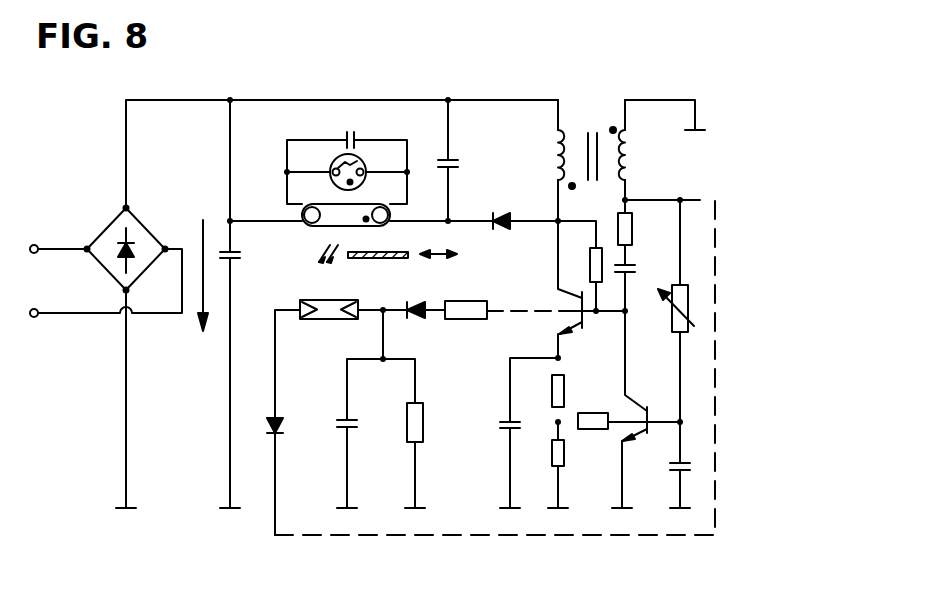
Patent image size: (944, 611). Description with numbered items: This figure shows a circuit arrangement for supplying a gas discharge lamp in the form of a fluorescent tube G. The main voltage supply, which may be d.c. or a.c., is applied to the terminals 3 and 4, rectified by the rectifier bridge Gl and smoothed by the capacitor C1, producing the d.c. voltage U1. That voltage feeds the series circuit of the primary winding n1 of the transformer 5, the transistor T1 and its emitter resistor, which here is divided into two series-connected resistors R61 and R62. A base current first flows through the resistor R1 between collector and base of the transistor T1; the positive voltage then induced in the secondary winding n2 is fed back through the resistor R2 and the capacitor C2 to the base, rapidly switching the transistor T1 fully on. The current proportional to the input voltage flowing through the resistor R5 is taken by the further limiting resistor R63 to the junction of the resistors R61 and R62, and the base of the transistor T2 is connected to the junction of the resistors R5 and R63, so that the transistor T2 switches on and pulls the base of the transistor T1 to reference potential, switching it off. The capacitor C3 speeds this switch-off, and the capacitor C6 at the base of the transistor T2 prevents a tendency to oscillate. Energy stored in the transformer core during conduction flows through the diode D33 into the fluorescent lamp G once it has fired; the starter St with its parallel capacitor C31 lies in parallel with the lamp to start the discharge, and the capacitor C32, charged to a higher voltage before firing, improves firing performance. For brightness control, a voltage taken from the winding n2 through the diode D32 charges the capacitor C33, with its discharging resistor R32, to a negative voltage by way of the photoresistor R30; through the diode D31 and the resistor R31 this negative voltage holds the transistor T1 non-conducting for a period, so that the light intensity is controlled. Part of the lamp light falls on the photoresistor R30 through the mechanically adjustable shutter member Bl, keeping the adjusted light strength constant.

The terminal 3 is at (25, 250).
The terminal 4 is at (25, 314).
The rectifier bridge Gl is at (101, 225).
The d.c. voltage U1 is at (204, 260).
The capacitor C1 is at (247, 263).
The capacitor C31 is at (354, 137).
The starter St is at (362, 164).
The fluorescent tube G is at (366, 211).
The capacitor C32 is at (453, 163).
The shutter member Bl is at (388, 265).
The diode D33 is at (503, 206).
The primary winding n1 is at (554, 160).
The transformer 5 is at (591, 133).
The secondary winding n2 is at (633, 160).
The resistor R1 is at (591, 251).
The resistor R2 is at (633, 222).
The capacitor C2 is at (635, 266).
The resistor R5 is at (665, 308).
The transistor T1 is at (588, 318).
The photoresistor R30 is at (333, 315).
The diode D31 is at (409, 316).
The resistor R31 is at (455, 317).
The resistor R61 is at (562, 391).
The transistor T2 is at (652, 407).
The capacitor C3 is at (507, 421).
The limiting resistor R63 is at (609, 436).
The resistor R62 is at (563, 457).
The diode D32 is at (283, 431).
The capacitor C33 is at (350, 429).
The discharging resistor R32 is at (424, 429).
The capacitor C6 is at (669, 469).